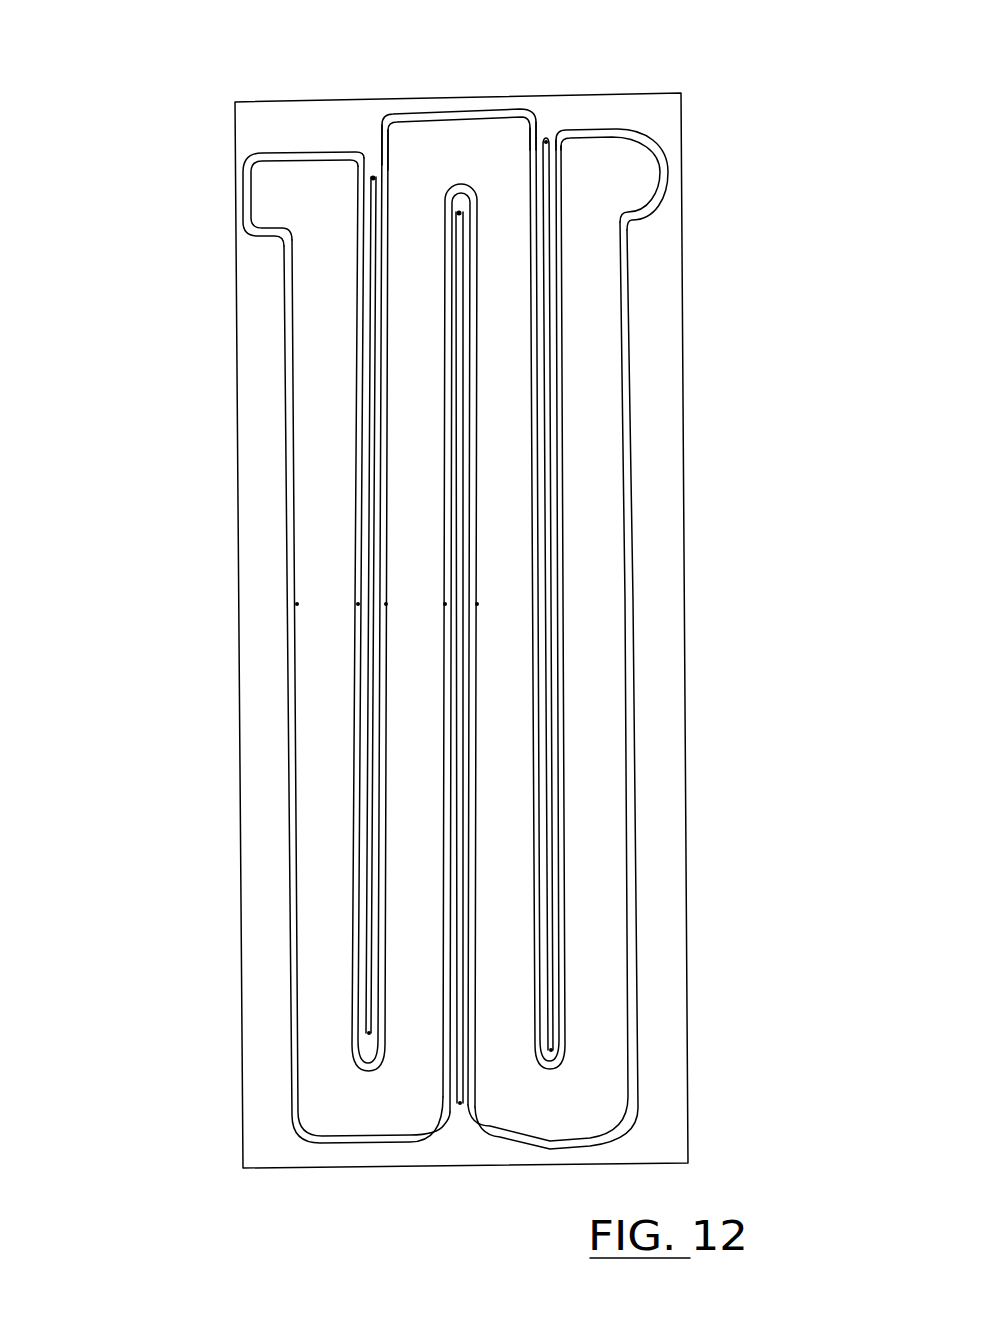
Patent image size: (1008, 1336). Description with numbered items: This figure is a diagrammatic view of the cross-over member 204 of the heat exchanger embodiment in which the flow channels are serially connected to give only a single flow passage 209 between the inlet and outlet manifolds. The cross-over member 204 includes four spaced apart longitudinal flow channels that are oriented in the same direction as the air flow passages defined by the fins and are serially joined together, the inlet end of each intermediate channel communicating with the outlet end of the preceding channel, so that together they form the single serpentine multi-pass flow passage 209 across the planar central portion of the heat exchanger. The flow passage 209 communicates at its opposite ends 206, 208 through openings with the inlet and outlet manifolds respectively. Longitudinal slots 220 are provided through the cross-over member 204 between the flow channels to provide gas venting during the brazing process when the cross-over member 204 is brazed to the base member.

The cross-over member 204 is at (245, 776).
The end of flow passage 206 is at (288, 185).
The end of flow passage 208 is at (637, 180).
The flow passage 209 is at (470, 117).
The longitudinal slots 220 is at (373, 177).